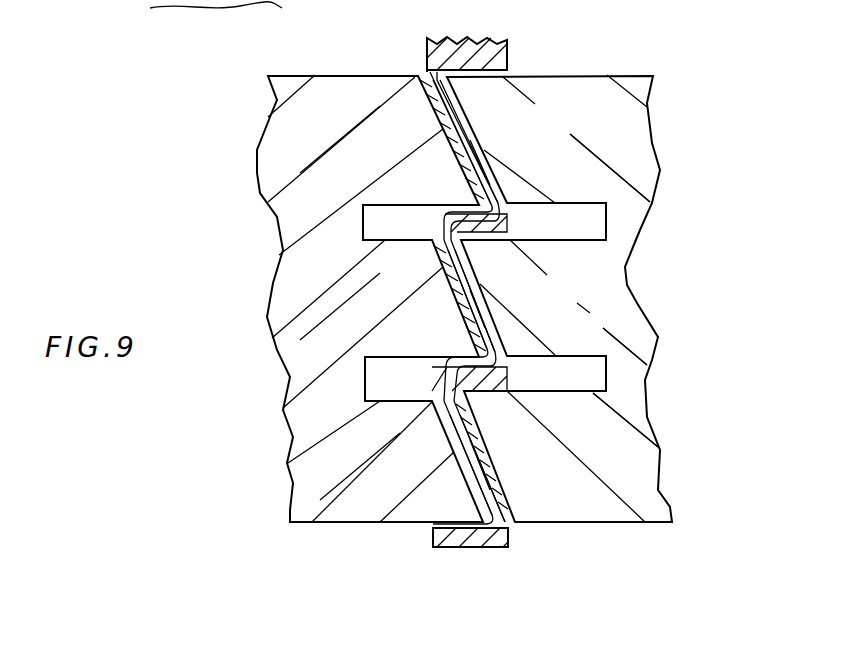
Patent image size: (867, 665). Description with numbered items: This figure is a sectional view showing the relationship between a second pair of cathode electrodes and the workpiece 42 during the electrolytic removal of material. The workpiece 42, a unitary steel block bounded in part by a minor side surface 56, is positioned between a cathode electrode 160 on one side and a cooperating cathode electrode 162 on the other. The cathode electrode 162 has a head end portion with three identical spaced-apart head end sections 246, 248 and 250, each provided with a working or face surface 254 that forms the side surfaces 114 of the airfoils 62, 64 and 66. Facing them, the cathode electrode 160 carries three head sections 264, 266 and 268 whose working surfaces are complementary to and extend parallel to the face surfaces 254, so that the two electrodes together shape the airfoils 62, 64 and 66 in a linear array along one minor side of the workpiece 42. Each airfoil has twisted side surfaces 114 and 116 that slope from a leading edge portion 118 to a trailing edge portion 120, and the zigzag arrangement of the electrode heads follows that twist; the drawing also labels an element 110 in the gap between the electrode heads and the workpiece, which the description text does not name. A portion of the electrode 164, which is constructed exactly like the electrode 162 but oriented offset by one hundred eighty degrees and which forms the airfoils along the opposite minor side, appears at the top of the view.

The cathode electrode 160 is at (303, 535).
The cathode electrode 162 is at (626, 542).
The workpiece 42 is at (522, 48).
The minor side surface 56 is at (465, 550).
The airfoil 62 is at (501, 445).
The airfoil 64 is at (494, 288).
The airfoil 66 is at (497, 123).
The seal strip 110 is at (456, 215).
The side surface 114 is at (503, 95).
The side surface 116 is at (452, 112).
The leading edge portion 118 is at (450, 232).
The trailing edge portion 120 is at (480, 318).
The working or face surface 254 is at (480, 170).
The electrode 164 is at (134, 10).
The head end section 246 is at (568, 416).
The head end section 248 is at (565, 248).
The head end section 250 is at (567, 150).
The head section 264 is at (417, 462).
The head section 266 is at (415, 317).
The head section 268 is at (412, 157).